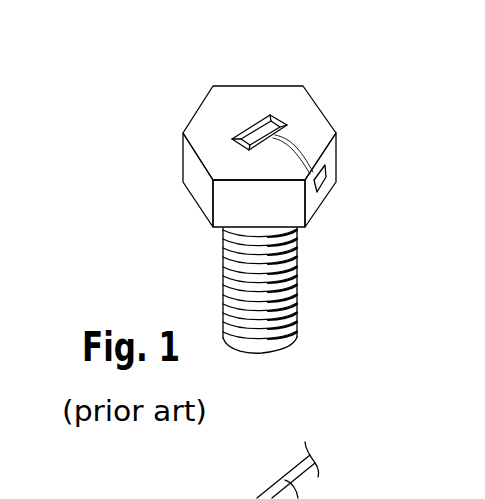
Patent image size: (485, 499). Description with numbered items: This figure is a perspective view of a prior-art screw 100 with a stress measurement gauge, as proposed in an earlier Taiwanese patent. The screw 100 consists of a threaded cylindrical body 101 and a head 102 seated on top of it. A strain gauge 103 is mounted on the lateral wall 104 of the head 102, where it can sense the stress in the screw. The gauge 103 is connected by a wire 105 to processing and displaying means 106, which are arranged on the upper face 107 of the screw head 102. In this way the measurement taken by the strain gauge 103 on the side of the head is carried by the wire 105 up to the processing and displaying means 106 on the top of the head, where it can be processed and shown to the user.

The screw 100 is at (140, 153).
The threaded cylindrical body 101 is at (297, 280).
The head 102 is at (277, 84).
The strain gauge 103 is at (325, 183).
The lateral wall 104 is at (312, 206).
The wire 105 is at (292, 142).
The processing and displaying means 106 is at (273, 118).
The upper face 107 is at (226, 91).